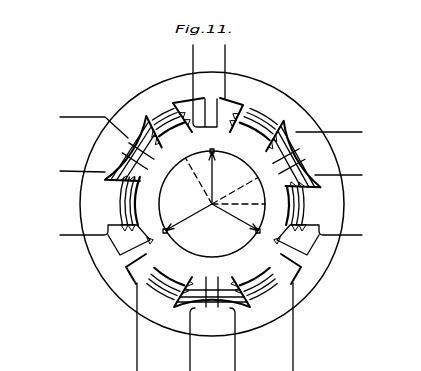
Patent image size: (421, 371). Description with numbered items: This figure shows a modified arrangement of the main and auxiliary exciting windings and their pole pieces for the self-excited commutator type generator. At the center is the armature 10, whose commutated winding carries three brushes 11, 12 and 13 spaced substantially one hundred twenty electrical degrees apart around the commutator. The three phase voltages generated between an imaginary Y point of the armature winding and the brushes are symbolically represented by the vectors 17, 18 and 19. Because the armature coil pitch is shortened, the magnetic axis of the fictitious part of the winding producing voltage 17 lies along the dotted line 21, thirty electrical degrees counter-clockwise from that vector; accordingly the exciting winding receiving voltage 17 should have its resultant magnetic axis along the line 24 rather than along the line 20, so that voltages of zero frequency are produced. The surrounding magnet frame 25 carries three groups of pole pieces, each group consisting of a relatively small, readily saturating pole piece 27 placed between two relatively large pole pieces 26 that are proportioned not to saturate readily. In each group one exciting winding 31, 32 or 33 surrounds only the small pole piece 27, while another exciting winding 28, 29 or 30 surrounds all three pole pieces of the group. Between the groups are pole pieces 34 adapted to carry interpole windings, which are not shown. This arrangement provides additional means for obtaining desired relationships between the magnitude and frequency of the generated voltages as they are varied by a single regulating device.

The rotor 10 is at (163, 199).
The brush 11 is at (216, 151).
The brush 12 is at (258, 238).
The brush 13 is at (166, 238).
The voltage vector 17 is at (213, 168).
The voltage vector 18 is at (182, 222).
The voltage vector 19 is at (242, 228).
The line 20 is at (245, 205).
The dotted line 21 is at (195, 183).
The line 24 is at (238, 192).
The magnet frame 25 is at (140, 97).
The large pole piece 26 is at (178, 135).
The small pole piece 27 is at (140, 170).
The exciting winding 28 is at (258, 123).
The exciting winding 29 is at (256, 285).
The exciting winding 30 is at (120, 209).
The exciting winding 31 is at (305, 150).
The exciting winding 32 is at (205, 312).
The exciting winding 33 is at (122, 152).
The interpole pole piece 34 is at (194, 126).